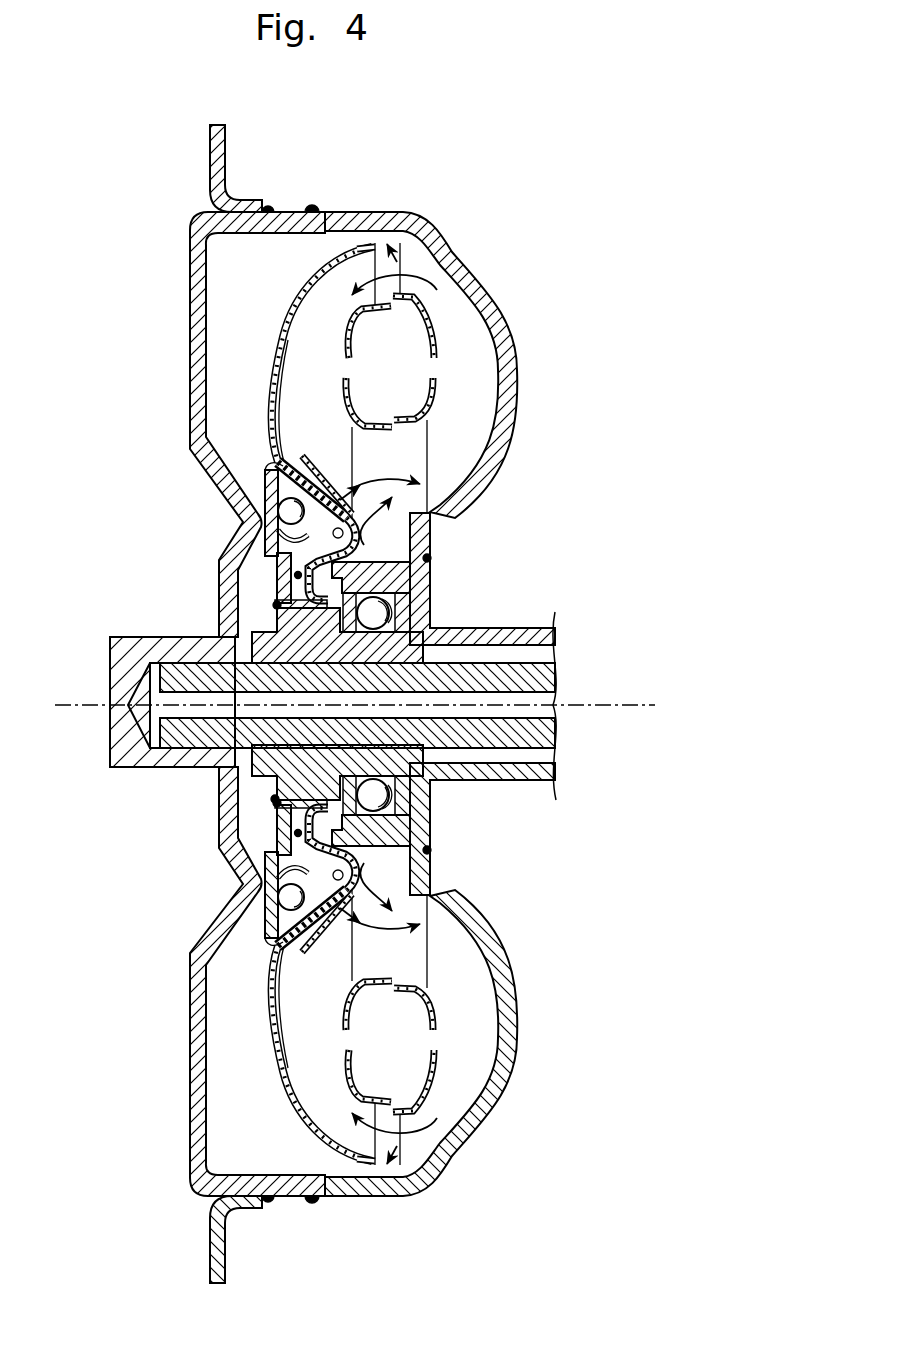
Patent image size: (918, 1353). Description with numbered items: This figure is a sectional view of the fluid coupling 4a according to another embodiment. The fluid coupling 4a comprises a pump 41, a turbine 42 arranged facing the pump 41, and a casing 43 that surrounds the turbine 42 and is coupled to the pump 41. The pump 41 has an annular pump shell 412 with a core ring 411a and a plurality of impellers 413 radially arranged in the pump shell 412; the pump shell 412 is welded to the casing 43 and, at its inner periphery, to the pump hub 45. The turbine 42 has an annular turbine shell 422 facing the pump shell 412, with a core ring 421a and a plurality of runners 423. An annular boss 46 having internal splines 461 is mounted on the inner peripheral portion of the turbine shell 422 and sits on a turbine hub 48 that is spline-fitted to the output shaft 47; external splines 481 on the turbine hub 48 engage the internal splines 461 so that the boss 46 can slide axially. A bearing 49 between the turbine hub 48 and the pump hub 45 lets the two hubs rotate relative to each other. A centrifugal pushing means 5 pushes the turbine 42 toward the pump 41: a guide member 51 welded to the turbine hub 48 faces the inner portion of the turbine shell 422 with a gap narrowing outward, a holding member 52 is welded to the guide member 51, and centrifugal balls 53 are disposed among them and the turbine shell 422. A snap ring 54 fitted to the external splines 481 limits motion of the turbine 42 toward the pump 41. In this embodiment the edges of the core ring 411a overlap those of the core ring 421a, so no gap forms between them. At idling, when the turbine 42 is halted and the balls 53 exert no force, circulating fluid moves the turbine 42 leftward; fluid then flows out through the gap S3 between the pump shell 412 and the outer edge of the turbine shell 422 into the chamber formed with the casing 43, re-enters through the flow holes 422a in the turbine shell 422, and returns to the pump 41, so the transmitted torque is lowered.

The fluid coupling 4a is at (321, 704).
The pump 41 is at (432, 695).
The core ring 411a is at (460, 333).
The pump shell 412 is at (520, 385).
The impellers 413 is at (457, 300).
The turbine 42 is at (302, 704).
The core ring 421a is at (303, 355).
The turbine shell 422 is at (278, 385).
The flow holes 422a is at (338, 500).
The runners 423 is at (290, 402).
The casing 43 is at (195, 303).
The pump hub 45 is at (430, 578).
The boss 46 is at (204, 704).
The internal splines 461 is at (273, 605).
The output shaft 47 is at (508, 742).
The turbine hub 48 is at (330, 656).
The external splines 481 is at (290, 620).
The bearing 49 is at (406, 610).
The centrifugal pushing means 5 is at (233, 699).
The guide member 51 is at (262, 508).
The holding member 52 is at (300, 526).
The centrifugal balls 53 is at (278, 500).
The snap ring 54 is at (273, 799).
The gap S3 is at (400, 1172).